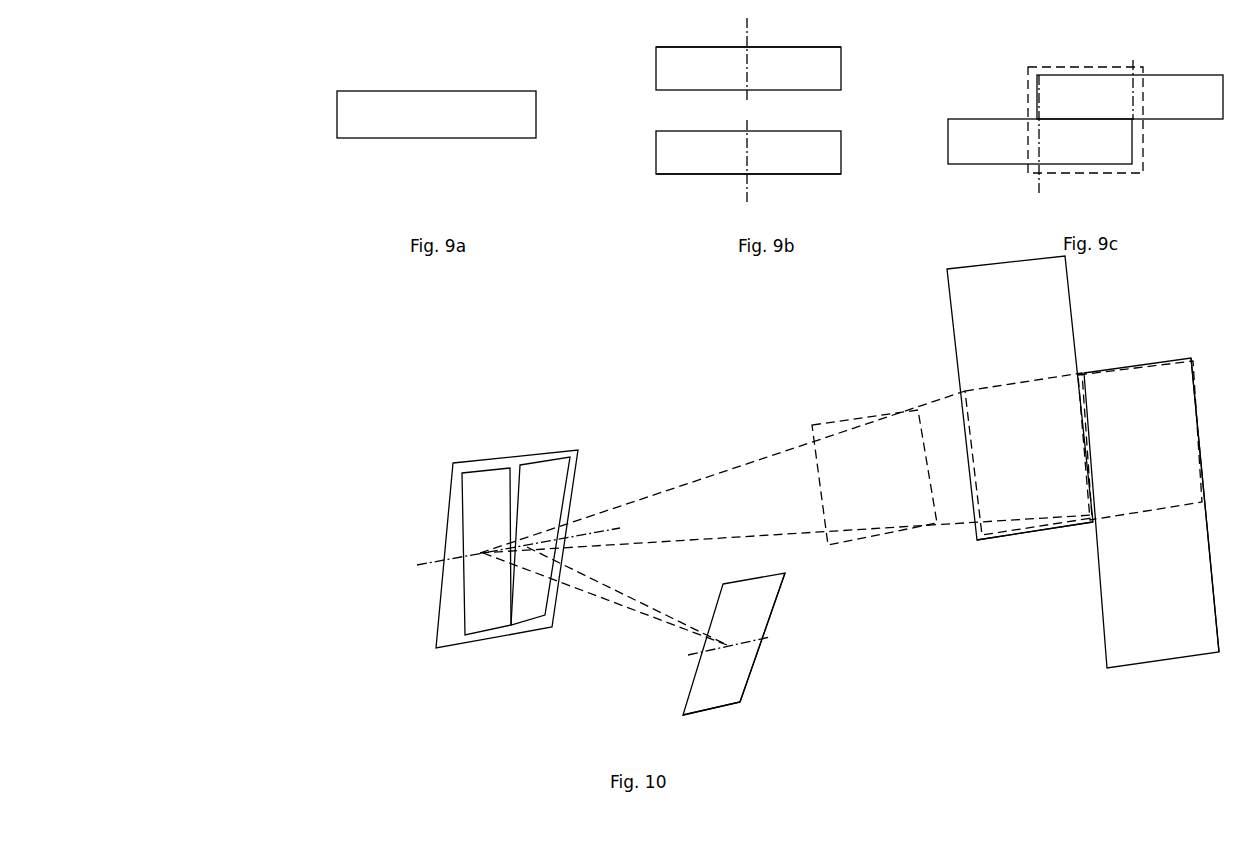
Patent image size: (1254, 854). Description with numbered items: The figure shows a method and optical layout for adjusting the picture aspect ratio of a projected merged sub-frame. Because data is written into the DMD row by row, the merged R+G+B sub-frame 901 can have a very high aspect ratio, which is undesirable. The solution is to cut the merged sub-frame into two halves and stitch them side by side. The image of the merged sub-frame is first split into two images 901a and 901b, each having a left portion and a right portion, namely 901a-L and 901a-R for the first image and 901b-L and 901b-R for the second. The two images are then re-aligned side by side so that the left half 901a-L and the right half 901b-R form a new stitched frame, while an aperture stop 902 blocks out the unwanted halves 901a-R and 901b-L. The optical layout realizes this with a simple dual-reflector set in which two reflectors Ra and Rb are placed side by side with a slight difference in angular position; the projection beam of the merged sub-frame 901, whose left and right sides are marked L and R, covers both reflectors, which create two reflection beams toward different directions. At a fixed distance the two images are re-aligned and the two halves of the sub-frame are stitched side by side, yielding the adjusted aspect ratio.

In FIG. 9A, the merged sub-frame 901 is at (400, 90).
In FIG. 10, the merged sub-frame 901 is at (797, 667).
In FIG. 9B, the first split image 901a is at (652, 68).
In FIG. 10, the first split image 901a is at (767, 527).
In FIG. 9B, the second split image 901b is at (652, 163).
In FIG. 10, the second split image 901b is at (767, 460).
In FIG. 9B, the left half of first split image 901a-L is at (730, 60).
In FIG. 9C, the left half of first split image 901a-L is at (1066, 90).
In FIG. 10, the left half of first split image 901a-L is at (1155, 407).
In FIG. 9B, the right half of first split image 901a-R is at (808, 58).
In FIG. 9B, the left half of second split image 901b-L is at (716, 163).
In FIG. 9B, the right half of second split image 901b-R is at (820, 158).
In FIG. 9C, the right half of second split image 901b-R is at (1072, 150).
In FIG. 10, the right half of second split image 901b-R is at (1028, 478).
In FIG. 9C, the aperture stop 902 is at (1027, 90).
In FIG. 10, the aperture stop 902 is at (880, 406).
In FIG. 10, the first reflector Ra is at (559, 478).
In FIG. 10, the second reflector Rb is at (467, 491).
In FIG. 10, the left half of merged frame L is at (757, 611).
In FIG. 10, the right half of merged frame R is at (732, 686).